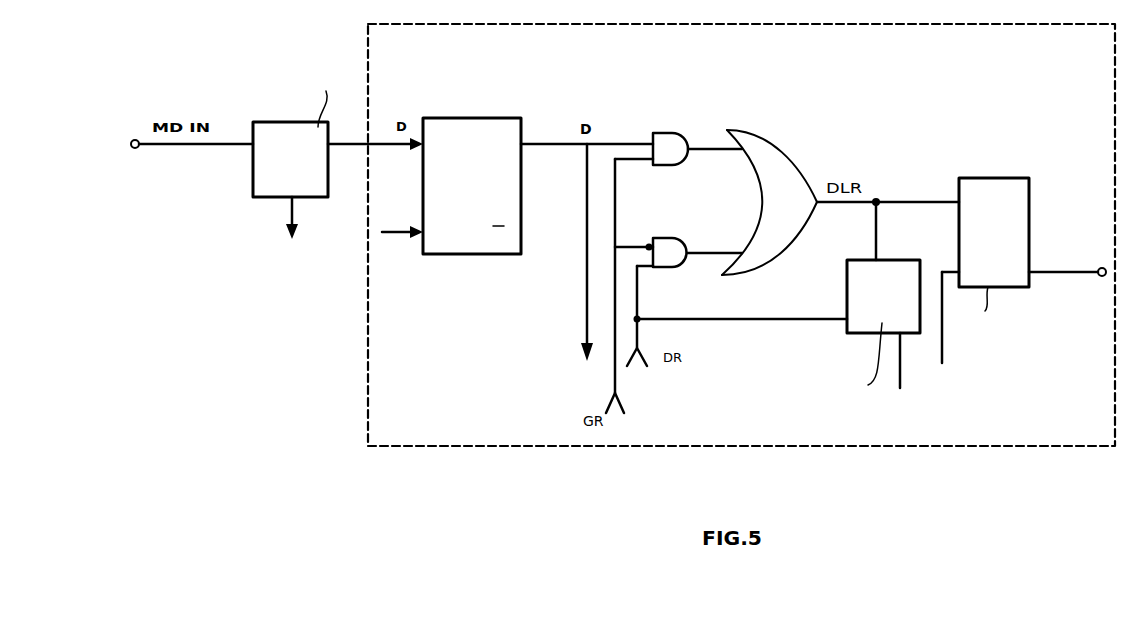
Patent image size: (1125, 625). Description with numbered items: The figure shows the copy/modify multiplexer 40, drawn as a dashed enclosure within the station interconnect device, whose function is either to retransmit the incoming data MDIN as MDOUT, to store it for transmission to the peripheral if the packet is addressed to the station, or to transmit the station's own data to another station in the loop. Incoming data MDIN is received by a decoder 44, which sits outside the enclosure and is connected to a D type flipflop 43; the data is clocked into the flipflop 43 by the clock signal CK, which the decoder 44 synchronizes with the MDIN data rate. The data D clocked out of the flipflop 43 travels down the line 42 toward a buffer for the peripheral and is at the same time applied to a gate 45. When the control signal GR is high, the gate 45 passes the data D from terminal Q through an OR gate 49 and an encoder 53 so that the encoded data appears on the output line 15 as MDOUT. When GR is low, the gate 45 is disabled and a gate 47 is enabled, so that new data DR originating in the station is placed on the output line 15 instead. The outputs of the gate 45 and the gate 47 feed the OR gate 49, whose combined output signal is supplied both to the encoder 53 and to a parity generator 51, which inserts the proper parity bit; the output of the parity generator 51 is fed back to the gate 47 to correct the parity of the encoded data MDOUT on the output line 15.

The output line 15 is at (1083, 276).
The copy/modify multiplexer 40 is at (383, 402).
The line 42 is at (583, 300).
The D type flipflop 43 is at (423, 241).
The decoder 44 is at (262, 198).
The gate 45 is at (660, 135).
The gate 47 is at (657, 267).
The OR gate 49 is at (786, 154).
The parity generator 51 is at (889, 260).
The encoder 53 is at (970, 178).